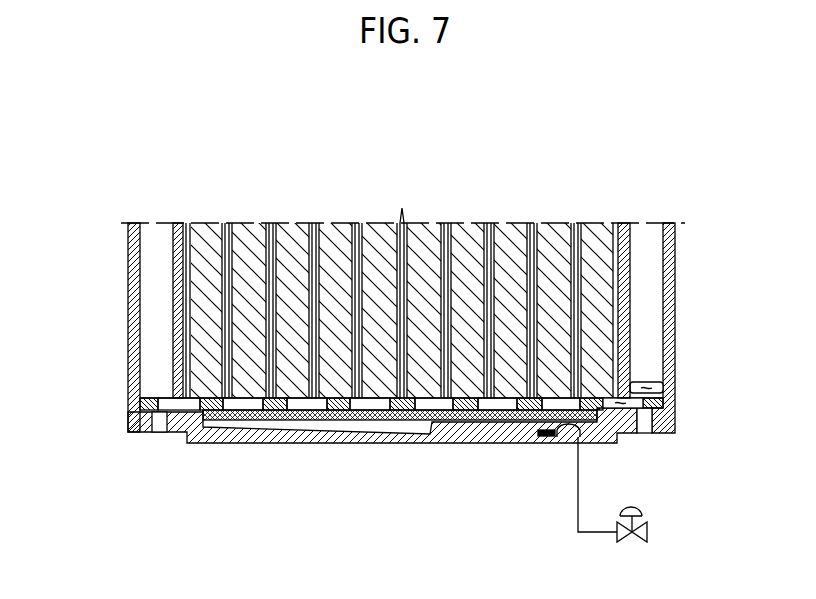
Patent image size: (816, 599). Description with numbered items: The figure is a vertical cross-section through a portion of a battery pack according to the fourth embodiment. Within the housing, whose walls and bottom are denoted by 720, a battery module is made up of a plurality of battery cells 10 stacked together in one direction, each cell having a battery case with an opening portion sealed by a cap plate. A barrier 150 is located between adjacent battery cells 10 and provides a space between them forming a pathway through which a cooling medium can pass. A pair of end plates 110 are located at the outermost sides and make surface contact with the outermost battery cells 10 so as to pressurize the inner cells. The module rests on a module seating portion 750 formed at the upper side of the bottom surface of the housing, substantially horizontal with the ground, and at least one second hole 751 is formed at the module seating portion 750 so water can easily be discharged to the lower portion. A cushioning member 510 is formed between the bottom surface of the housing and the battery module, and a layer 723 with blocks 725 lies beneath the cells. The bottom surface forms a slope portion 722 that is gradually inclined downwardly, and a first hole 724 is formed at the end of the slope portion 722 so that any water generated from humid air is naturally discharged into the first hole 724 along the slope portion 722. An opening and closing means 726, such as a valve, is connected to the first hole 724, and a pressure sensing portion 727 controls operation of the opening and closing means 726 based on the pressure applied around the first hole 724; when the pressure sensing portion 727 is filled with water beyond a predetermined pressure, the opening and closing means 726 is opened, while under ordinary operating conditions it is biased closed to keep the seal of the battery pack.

The battery cell 10 is at (292, 235).
The end plate 110 is at (625, 226).
The barrier 150 is at (272, 222).
The cushioning member 510 is at (253, 445).
The housing wall 720 is at (128, 292).
The slope portion 722 is at (448, 408).
The pad layer 723 is at (140, 398).
The first hole 724 is at (563, 424).
The spacer block 725 is at (158, 433).
The opening and closing means 726 is at (647, 528).
The pressure sensing portion 727 is at (536, 434).
The module seating portion 750 is at (645, 410).
The second hole 751 is at (662, 386).